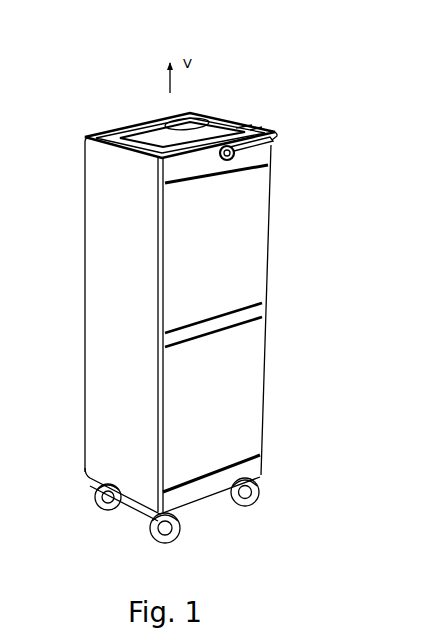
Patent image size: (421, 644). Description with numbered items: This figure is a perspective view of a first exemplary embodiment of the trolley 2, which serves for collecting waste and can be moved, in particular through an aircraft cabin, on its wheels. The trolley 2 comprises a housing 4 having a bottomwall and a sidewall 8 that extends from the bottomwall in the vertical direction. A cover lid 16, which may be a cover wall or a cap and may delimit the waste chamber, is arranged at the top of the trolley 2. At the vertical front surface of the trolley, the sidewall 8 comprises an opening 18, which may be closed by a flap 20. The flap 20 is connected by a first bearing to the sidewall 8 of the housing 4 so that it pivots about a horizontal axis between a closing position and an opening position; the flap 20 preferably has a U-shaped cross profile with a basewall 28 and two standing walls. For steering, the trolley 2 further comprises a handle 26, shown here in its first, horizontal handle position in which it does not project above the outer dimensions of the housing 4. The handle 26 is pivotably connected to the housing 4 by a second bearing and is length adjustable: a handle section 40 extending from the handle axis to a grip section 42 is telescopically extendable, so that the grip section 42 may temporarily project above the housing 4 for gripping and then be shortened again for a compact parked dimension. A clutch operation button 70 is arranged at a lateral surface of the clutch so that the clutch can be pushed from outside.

The trolley 2 is at (281, 113).
The housing 4 is at (276, 207).
The sidewall 8 is at (250, 264).
The cover lid 16 is at (125, 133).
The opening 18 is at (79, 427).
The flap 20 is at (94, 383).
The handle 26 is at (284, 132).
The basewall 28 is at (115, 313).
The handle section 40 is at (243, 127).
The grip section 42 is at (257, 118).
The clutch operation button 70 is at (245, 151).